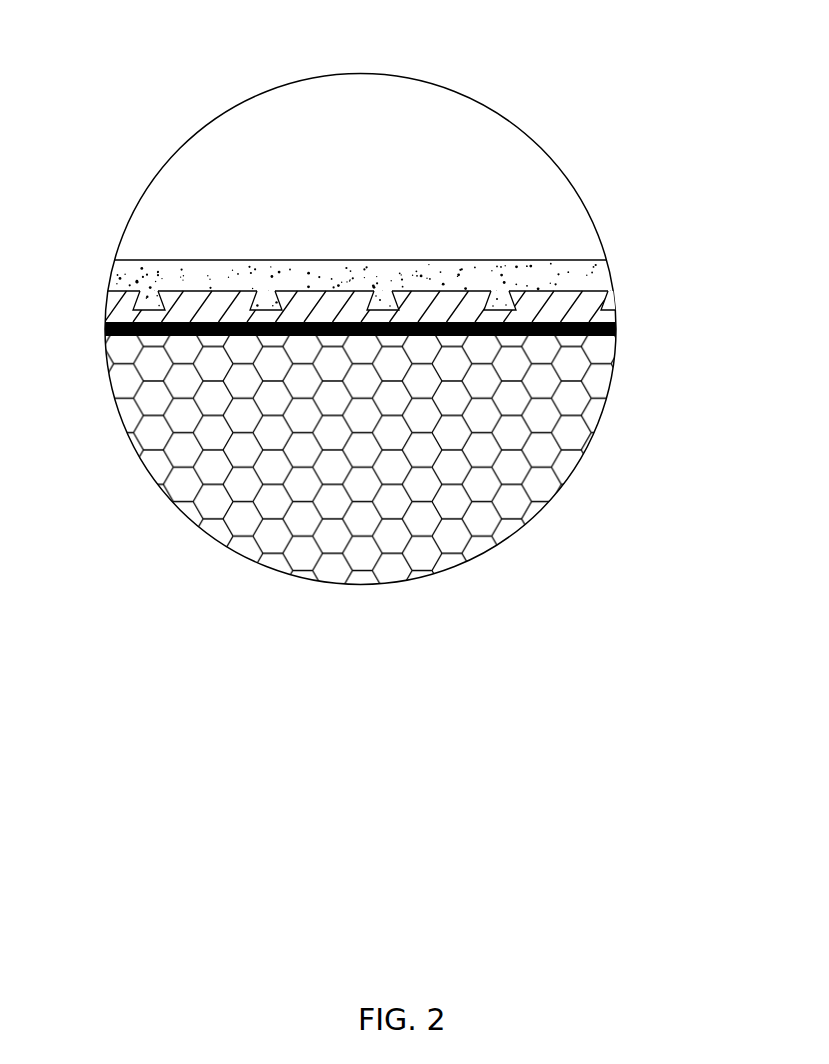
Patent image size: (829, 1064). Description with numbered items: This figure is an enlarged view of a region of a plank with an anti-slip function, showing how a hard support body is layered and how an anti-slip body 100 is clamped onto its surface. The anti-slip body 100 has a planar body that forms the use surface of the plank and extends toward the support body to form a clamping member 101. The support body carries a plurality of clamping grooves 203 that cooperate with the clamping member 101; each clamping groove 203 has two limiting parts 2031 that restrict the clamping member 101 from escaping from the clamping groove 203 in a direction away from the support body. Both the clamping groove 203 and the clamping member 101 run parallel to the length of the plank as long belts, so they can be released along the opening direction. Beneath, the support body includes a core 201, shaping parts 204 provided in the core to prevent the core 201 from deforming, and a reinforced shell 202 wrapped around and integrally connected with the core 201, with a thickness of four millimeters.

The anti-slip body 100 is at (330, 272).
The clamping member 101 is at (263, 303).
The core 201 is at (543, 420).
The reinforced shell 202 is at (602, 293).
The clamping groove 203 is at (141, 300).
The limiting part 2031 is at (399, 294).
The shaping part 204 is at (618, 329).